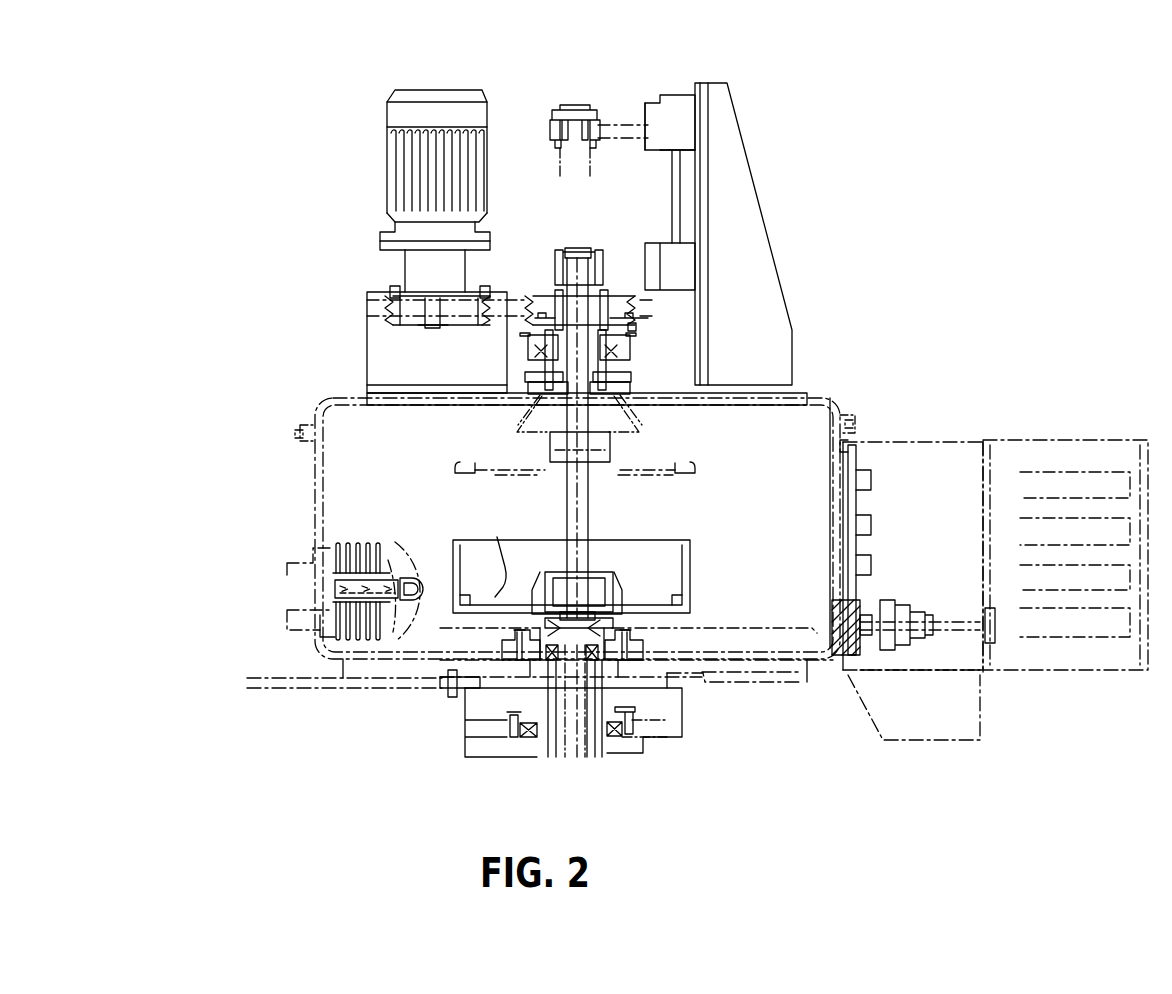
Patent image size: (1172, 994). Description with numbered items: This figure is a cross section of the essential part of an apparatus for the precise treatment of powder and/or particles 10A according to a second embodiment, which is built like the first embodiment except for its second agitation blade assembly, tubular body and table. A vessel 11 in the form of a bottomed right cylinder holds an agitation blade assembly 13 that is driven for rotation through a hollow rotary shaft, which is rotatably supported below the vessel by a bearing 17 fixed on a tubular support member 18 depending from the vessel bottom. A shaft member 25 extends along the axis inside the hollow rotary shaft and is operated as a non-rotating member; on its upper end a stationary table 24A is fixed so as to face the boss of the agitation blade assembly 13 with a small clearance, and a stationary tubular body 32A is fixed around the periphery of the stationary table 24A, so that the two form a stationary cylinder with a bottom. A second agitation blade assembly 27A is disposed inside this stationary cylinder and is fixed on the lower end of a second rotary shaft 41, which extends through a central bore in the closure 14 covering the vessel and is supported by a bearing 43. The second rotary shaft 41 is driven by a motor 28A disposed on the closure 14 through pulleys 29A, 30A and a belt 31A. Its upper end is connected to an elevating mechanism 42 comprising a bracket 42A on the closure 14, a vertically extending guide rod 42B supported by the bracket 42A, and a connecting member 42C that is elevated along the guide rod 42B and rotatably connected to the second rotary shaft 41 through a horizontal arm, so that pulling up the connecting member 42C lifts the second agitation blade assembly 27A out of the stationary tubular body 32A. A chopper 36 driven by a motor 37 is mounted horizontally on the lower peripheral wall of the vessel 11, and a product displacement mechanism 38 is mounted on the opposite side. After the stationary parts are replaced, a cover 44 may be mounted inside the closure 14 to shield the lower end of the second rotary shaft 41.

The apparatus for the precise treatment of powder and/or particles 10A is at (958, 310).
The vessel 11 is at (315, 491).
The agitation blade assembly 13 is at (764, 648).
The closure 14 is at (828, 400).
The bearing 17 is at (485, 763).
The tubular support member 18 is at (462, 735).
The stationary table 24A is at (670, 618).
The shaft member 25 is at (568, 760).
The second agitation blade assembly 27A is at (510, 475).
The motor 28A is at (405, 162).
The pulley 29A is at (416, 312).
The pulley 30A is at (525, 297).
The belt 31A is at (505, 318).
The stationary tubular body 32A is at (697, 564).
The chopper 36 is at (287, 612).
The motor 37 is at (287, 575).
The product displacement mechanism 38 is at (1030, 467).
The second rotary shaft 41 is at (576, 106).
The elevating mechanism 42 is at (905, 95).
The bracket 42A is at (727, 135).
The guide rod 42B is at (683, 194).
The connecting member 42C is at (622, 112).
The bearing 43 is at (620, 362).
The cover 44 is at (628, 419).